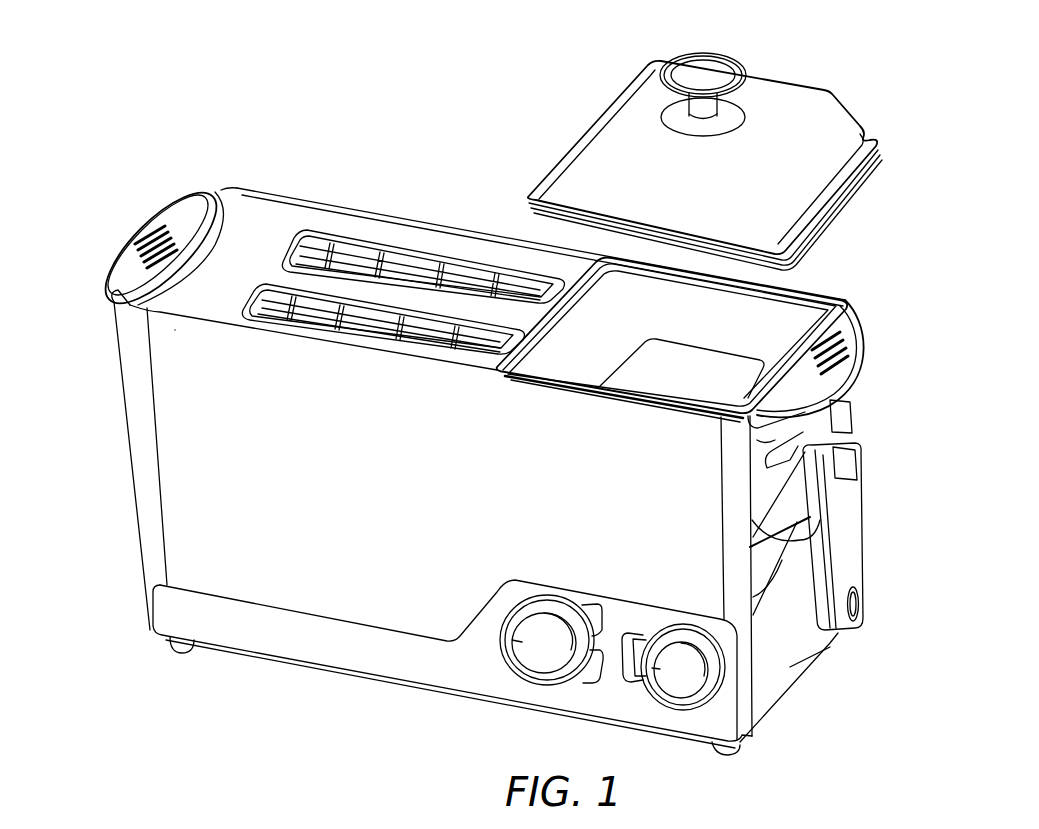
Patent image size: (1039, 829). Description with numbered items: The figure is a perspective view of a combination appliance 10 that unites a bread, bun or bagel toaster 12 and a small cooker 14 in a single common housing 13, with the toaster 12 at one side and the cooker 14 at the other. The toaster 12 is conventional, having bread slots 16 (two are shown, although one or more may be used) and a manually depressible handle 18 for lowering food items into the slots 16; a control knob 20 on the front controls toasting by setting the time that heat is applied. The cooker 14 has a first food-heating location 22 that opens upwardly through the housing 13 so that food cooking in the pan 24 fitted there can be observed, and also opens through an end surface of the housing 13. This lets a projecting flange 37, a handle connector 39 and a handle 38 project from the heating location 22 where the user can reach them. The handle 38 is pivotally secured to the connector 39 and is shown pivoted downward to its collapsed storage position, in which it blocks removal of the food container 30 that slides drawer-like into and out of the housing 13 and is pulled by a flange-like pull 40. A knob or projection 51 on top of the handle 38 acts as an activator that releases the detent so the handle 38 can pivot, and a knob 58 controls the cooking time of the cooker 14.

The appliance 10 is at (527, 118).
The toaster 12 is at (358, 190).
The housing 13 is at (338, 483).
The cooker 14 is at (888, 280).
The bread slots 16 is at (410, 327).
The handle 18 is at (163, 212).
The control knob 20 is at (543, 648).
The first food-heating location 22 is at (726, 381).
The pan 24 is at (783, 328).
The food container 30 is at (752, 603).
The projecting flange 37 is at (866, 350).
The handle 38 is at (863, 523).
The handle connector 39 is at (765, 477).
The flange-like pull 40 is at (845, 535).
The knob or projection 51 is at (857, 463).
The knob 58 is at (673, 673).